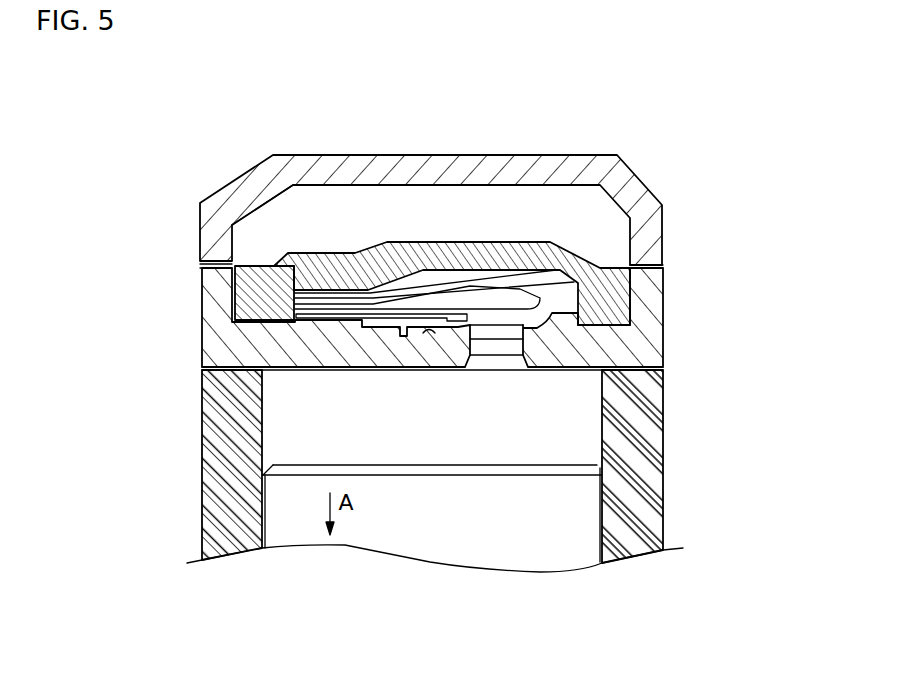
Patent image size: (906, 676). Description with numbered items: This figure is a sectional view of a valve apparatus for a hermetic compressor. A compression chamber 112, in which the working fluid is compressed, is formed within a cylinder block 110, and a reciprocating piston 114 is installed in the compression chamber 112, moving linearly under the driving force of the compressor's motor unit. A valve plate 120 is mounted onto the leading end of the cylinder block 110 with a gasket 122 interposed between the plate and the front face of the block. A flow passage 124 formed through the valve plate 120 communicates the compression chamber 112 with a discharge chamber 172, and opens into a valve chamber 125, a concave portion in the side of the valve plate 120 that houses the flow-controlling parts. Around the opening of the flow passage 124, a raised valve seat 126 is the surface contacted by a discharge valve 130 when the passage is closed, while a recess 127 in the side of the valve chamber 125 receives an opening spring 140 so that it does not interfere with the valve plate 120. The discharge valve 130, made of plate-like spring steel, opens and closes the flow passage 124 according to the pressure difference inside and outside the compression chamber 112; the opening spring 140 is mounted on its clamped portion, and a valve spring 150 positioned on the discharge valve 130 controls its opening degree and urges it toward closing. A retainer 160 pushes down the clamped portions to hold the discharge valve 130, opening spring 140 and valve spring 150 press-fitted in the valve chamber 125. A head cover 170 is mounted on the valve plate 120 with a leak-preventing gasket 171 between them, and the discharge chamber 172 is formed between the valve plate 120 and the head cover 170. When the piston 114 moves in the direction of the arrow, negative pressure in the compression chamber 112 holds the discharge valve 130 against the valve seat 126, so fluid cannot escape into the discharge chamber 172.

The cylinder block 110 is at (640, 479).
The compression chamber 112 is at (567, 448).
The piston 114 is at (557, 532).
The valve plate 120 is at (663, 317).
The gasket 122 is at (663, 355).
The flow passage 124 is at (495, 355).
The valve chamber 125 is at (598, 286).
The valve seat 126 is at (618, 384).
The recess 127 is at (440, 335).
The discharge valve 130 is at (630, 305).
The opening spring 140 is at (333, 312).
The valve spring 150 is at (484, 278).
The retainer 160 is at (563, 258).
The head cover 170 is at (203, 218).
The gasket 171 is at (203, 266).
The discharge chamber 172 is at (300, 212).